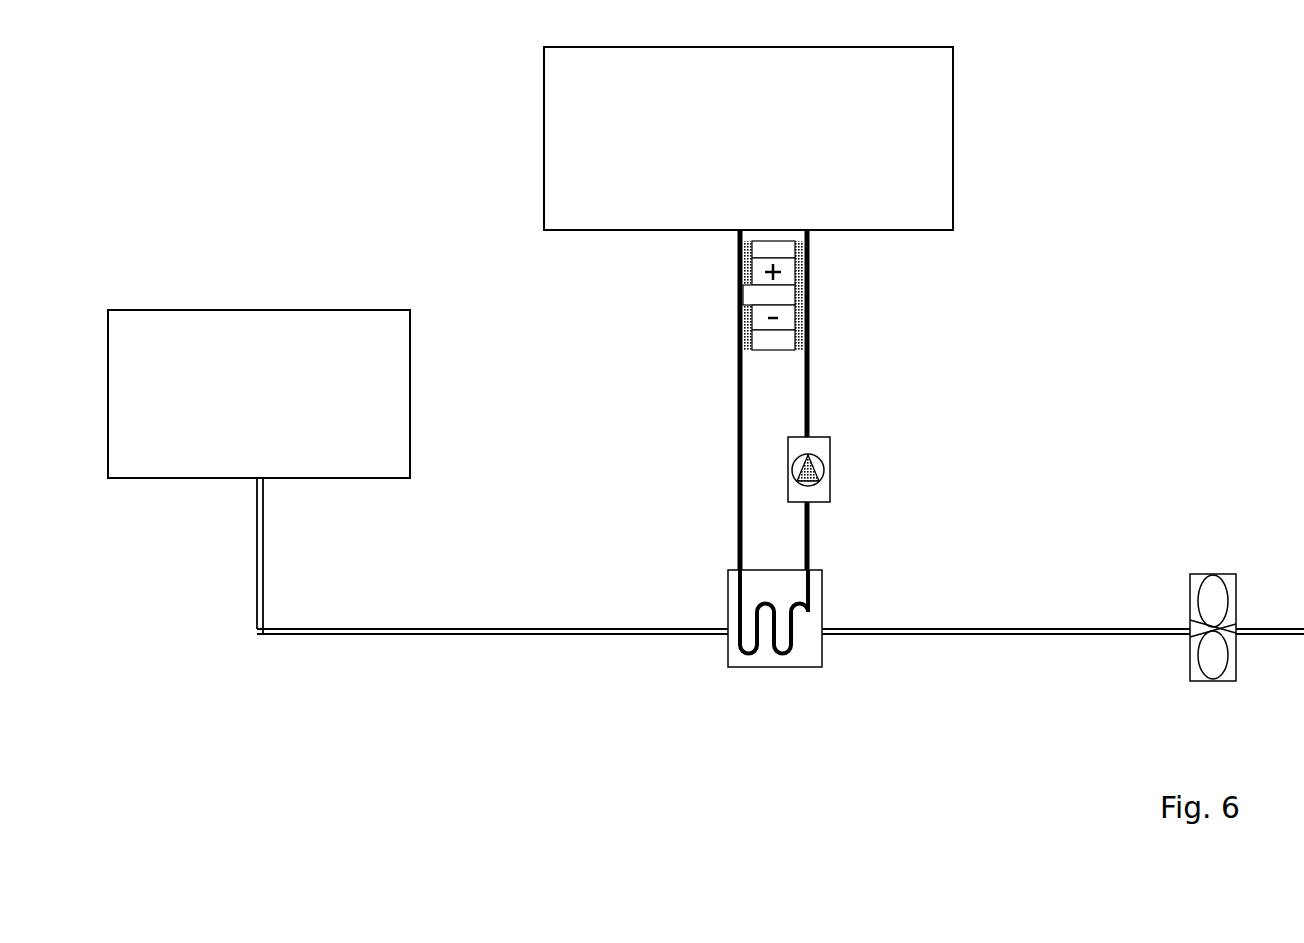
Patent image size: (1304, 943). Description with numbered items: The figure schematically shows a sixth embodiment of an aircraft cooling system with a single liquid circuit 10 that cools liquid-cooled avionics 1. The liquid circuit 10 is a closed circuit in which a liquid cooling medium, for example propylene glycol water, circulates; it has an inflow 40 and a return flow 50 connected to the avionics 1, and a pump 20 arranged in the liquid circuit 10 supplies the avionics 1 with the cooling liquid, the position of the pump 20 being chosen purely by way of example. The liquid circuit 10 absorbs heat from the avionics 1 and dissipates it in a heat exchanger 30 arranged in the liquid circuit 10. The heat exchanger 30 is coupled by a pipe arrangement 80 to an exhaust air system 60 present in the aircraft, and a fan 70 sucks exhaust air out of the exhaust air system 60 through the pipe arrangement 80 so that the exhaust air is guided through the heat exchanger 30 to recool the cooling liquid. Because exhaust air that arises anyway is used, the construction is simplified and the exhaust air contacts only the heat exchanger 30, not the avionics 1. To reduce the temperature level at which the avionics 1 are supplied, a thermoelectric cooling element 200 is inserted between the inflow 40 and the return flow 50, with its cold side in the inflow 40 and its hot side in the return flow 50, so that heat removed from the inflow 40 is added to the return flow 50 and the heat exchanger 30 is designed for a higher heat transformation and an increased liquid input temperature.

The avionics 1 is at (955, 91).
The liquid circuit 10 is at (830, 534).
The pump 20 is at (831, 469).
The heat exchanger 30 is at (823, 599).
The inflow 40 is at (809, 401).
The return flow 50 is at (738, 418).
The exhaust air system 60 is at (411, 419).
The fan 70 is at (1216, 574).
The pipe arrangement 80 is at (313, 634).
The thermoelectric cooling element 200 is at (809, 293).